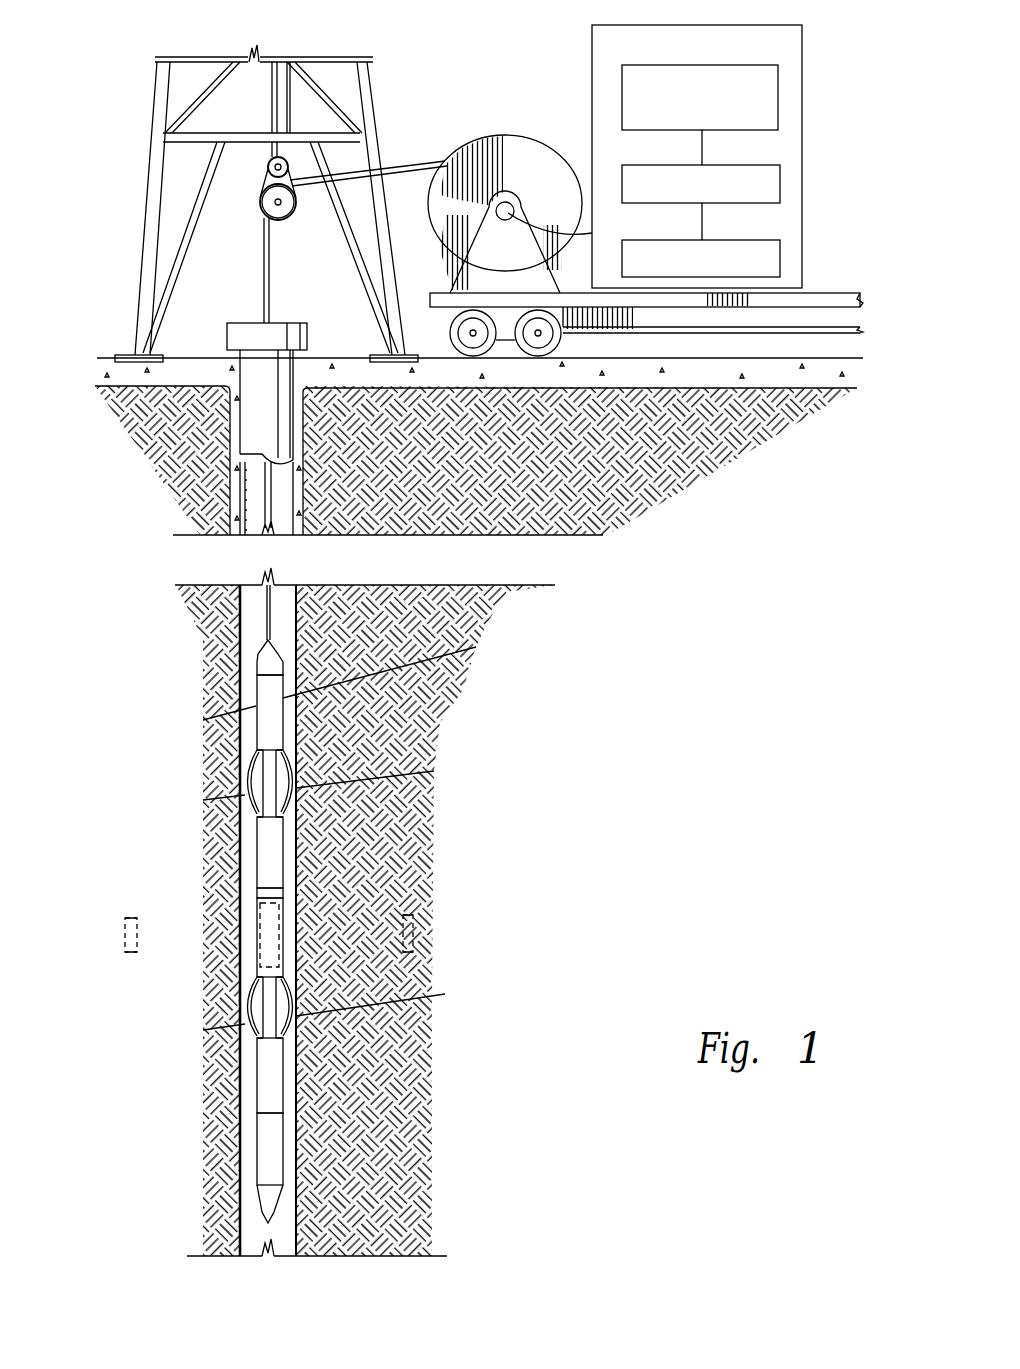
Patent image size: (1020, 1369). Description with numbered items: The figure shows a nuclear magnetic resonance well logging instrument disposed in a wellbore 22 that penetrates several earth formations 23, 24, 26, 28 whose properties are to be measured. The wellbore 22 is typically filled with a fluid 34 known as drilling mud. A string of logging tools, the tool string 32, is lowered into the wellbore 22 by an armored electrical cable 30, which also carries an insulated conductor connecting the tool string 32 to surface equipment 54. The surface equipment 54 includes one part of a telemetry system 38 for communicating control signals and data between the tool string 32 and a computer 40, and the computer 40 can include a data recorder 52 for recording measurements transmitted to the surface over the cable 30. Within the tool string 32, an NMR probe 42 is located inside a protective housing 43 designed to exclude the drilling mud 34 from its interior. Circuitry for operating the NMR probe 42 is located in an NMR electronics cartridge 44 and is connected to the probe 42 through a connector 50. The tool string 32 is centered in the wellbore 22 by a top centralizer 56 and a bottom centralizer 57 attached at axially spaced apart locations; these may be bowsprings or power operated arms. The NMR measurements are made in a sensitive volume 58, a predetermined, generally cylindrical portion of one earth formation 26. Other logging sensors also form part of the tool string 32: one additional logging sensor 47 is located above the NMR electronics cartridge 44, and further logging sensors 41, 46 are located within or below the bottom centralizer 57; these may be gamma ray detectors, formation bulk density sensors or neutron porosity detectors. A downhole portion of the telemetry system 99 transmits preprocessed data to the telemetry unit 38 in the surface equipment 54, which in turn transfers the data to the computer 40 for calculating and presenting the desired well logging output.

The wellbore 22 is at (241, 1170).
The earth formation 23 is at (463, 622).
The earth formation 24 is at (432, 718).
The earth formation 26 is at (410, 863).
The earth formation 28 is at (410, 1060).
The armored electrical cable 30 is at (267, 629).
The tool string 32 is at (108, 1250).
The fluid 34 is at (253, 612).
The telemetry system 38 is at (722, 240).
The computer 40 is at (722, 165).
The logging sensor 41 is at (257, 1083).
The NMR probe 42 is at (258, 947).
The protective housing 43 is at (258, 922).
The NMR electronics cartridge 44 is at (258, 852).
The logging sensor 46 is at (257, 1152).
The logging sensor 47 is at (262, 688).
The connector 50 is at (258, 892).
The data recorder 52 is at (725, 63).
The surface equipment 54 is at (735, 23).
The top centralizer 56 is at (268, 770).
The bottom centralizer 57 is at (265, 1008).
The sensitive volume 58 is at (131, 952).
The downhole portion of the telemetry system 99 is at (262, 652).